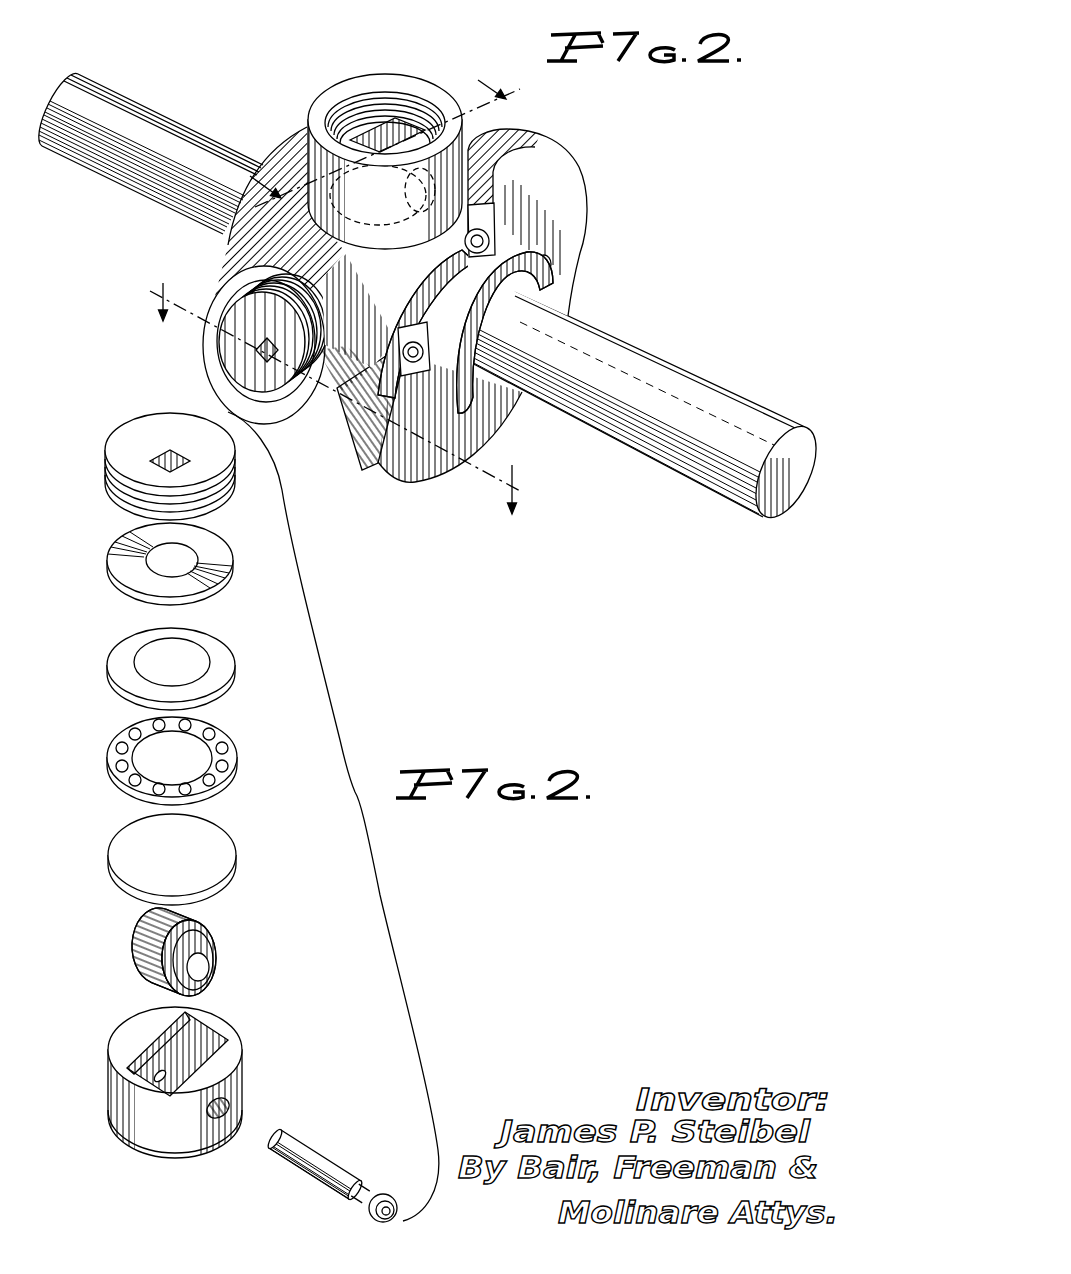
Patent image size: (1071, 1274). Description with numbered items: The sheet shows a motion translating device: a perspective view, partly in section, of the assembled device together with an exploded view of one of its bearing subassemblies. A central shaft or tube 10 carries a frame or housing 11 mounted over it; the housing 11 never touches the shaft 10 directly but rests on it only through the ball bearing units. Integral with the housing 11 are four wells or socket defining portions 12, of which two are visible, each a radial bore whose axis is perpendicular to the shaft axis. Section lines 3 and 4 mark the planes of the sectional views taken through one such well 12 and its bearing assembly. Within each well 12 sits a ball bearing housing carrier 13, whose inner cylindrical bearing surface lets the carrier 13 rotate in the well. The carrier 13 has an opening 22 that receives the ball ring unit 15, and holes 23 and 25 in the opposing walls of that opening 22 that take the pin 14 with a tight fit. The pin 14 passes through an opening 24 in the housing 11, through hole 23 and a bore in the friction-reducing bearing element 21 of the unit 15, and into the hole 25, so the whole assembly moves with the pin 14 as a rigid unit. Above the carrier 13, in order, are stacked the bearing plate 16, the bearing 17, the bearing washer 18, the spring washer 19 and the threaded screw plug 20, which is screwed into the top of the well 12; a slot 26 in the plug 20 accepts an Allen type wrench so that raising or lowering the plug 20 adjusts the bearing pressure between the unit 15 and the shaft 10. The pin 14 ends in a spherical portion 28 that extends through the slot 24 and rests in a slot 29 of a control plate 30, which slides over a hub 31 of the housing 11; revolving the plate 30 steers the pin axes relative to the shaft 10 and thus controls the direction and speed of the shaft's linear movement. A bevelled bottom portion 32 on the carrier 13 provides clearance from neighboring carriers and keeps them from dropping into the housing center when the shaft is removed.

In FIG. 1, the section line 3- 3 is at (397, 153).
In FIG. 1, the section line 4- 4 is at (341, 390).
In FIG. 1, the central shaft 10 is at (722, 398).
In FIG. 1, the housing 11 is at (283, 152).
In FIG. 1, the socket defining portion 12 is at (208, 342).
In FIG. 2, the ball bearing housing carrier 13 is at (183, 1088).
In FIG. 2, the pin 14 is at (338, 1163).
In FIG. 2, the ball ring unit 15 is at (202, 941).
In FIG. 2, the bearing plate 16 is at (223, 843).
In FIG. 2, the bearing 17 is at (223, 748).
In FIG. 2, the bearing washer 18 is at (223, 647).
In FIG. 2, the spring washer 19 is at (223, 555).
In FIG. 2, the threaded screw plug 20 is at (182, 454).
In FIG. 2, the friction-reducing bearing element 21 is at (207, 964).
In FIG. 2, the opening 22 is at (207, 1028).
In FIG. 2, the hole 23 is at (227, 1105).
In FIG. 1, the opening 24 is at (450, 252).
In FIG. 2, the hole 25 is at (158, 1070).
In FIG. 2, the slot 26 is at (165, 456).
In FIG. 2, the spherical portion 28 is at (385, 1196).
In FIG. 1, the slot 29 is at (490, 222).
In FIG. 1, the control plate 30 is at (568, 216).
In FIG. 1, the hub 31 is at (545, 284).
In FIG. 2, the bevelled bottom portion 32 is at (163, 1150).